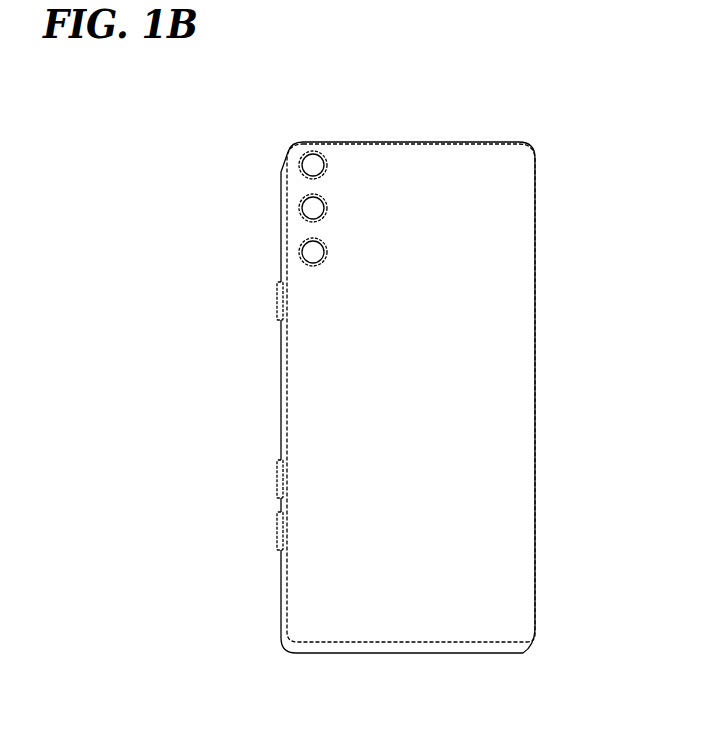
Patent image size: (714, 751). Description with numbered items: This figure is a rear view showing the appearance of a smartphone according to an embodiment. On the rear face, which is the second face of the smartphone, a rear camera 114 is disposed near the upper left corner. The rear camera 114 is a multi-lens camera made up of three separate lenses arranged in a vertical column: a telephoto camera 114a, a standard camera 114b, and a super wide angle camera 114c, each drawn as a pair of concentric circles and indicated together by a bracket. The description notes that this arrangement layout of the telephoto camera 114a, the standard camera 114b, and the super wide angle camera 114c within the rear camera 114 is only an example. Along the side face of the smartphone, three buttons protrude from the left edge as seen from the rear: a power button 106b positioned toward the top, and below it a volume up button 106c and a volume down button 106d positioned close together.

The rear camera 114 is at (491, 75).
The telephoto camera 114a is at (318, 208).
The standard camera 114b is at (320, 165).
The super wide angle camera 114c is at (318, 252).
The power button 106b is at (277, 295).
The volume up button 106c is at (277, 470).
The volume down button 106d is at (277, 525).